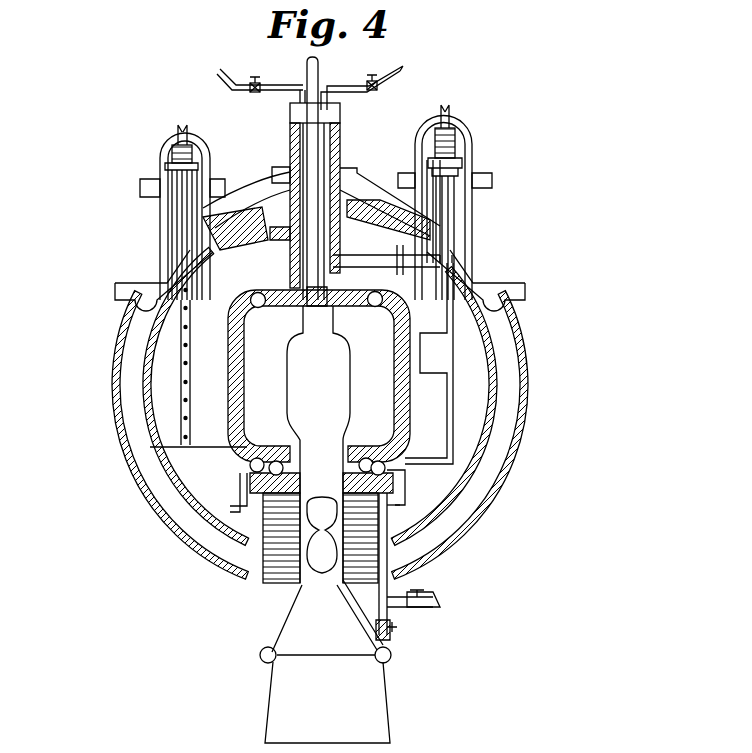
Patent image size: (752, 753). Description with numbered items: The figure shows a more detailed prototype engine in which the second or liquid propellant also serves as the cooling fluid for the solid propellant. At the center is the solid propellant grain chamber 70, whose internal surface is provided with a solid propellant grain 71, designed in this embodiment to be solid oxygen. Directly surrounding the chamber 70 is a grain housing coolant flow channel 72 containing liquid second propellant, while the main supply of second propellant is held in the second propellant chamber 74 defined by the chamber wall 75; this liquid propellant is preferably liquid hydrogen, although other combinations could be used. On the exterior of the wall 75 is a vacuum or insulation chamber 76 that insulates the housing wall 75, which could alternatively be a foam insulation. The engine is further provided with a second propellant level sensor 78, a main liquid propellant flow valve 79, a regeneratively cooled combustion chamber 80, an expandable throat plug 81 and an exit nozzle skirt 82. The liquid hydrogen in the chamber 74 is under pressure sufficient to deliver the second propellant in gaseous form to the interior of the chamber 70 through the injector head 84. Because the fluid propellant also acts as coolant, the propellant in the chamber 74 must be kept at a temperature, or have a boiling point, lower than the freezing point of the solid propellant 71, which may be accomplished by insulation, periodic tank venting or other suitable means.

The solid propellant grain chamber 70 is at (470, 281).
The solid propellant grain 71 is at (372, 363).
The grain housing coolant flow channel 72 is at (240, 400).
The second propellant chamber 74 is at (470, 374).
The chamber wall 75 is at (477, 452).
The vacuum or insulation chamber 76 is at (477, 482).
The second propellant level sensor 78 is at (180, 353).
The main liquid propellant flow valve 79 is at (392, 628).
The regeneratively cooled combustion chamber 80 is at (408, 543).
The expandable throat plug 81 is at (323, 587).
The exit nozzle skirt 82 is at (271, 643).
The injector head 84 is at (398, 285).